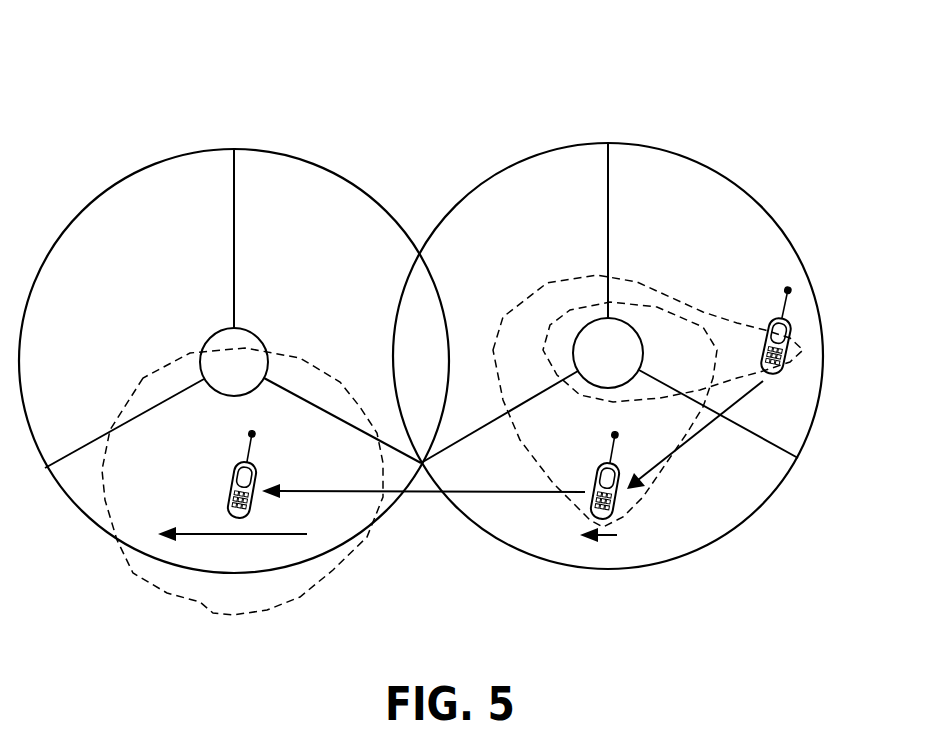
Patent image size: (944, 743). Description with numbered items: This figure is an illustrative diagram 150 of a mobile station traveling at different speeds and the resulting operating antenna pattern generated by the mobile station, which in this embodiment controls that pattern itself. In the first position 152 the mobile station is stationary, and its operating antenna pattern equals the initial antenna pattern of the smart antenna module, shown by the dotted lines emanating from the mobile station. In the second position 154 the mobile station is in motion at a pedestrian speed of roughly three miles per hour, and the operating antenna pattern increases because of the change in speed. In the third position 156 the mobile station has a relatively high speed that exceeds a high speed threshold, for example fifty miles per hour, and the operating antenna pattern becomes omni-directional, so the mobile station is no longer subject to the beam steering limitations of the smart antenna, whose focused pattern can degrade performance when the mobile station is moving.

The wireless communication system with two cells 150 is at (445, 91).
The first position 152 is at (790, 320).
The second position 154 is at (615, 505).
The third position 156 is at (250, 466).